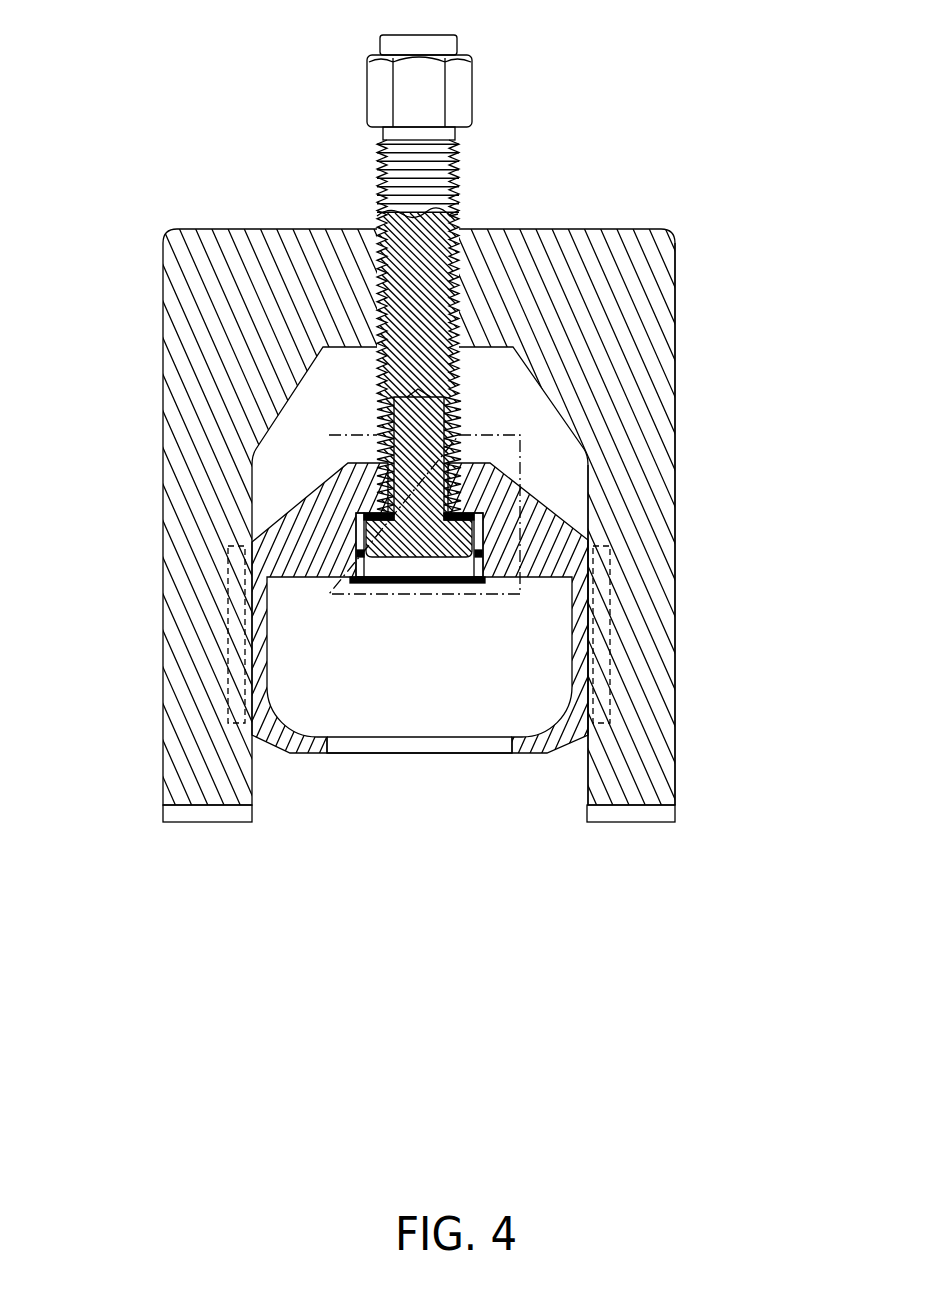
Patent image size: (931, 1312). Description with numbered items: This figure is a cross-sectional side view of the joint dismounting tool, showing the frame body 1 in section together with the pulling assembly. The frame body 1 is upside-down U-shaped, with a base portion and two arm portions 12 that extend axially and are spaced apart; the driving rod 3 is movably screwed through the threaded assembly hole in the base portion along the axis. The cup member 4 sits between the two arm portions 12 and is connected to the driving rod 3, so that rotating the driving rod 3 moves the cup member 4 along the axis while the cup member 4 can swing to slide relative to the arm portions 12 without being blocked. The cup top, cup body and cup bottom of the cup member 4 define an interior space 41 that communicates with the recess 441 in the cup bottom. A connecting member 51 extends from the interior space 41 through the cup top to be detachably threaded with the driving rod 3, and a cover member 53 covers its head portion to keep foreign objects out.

The frame body 1 is at (590, 275).
The arm portions 12 is at (657, 675).
The driving rod 3 is at (384, 238).
The cup member 4 is at (439, 653).
The interior space 41 is at (536, 658).
The recess 441 is at (415, 768).
The connecting member 51 is at (370, 532).
The cover member 53 is at (397, 578).